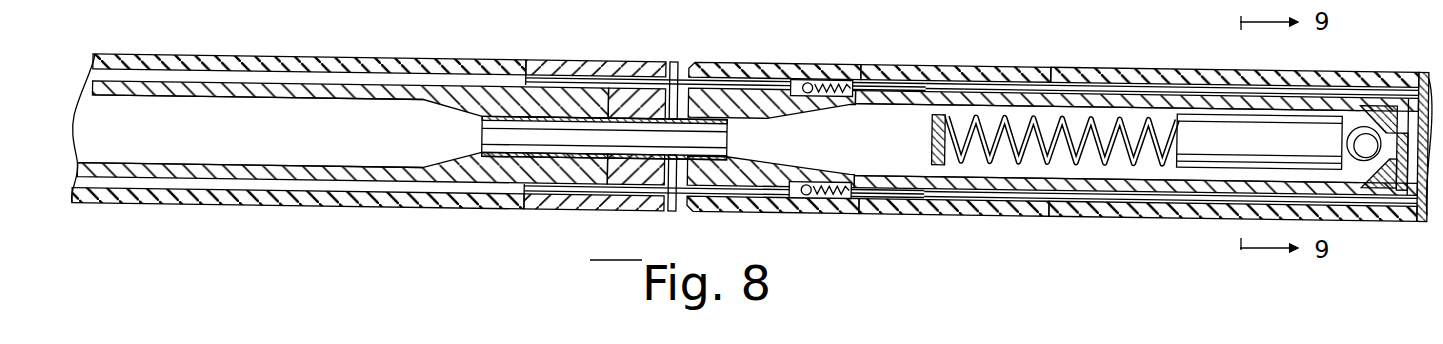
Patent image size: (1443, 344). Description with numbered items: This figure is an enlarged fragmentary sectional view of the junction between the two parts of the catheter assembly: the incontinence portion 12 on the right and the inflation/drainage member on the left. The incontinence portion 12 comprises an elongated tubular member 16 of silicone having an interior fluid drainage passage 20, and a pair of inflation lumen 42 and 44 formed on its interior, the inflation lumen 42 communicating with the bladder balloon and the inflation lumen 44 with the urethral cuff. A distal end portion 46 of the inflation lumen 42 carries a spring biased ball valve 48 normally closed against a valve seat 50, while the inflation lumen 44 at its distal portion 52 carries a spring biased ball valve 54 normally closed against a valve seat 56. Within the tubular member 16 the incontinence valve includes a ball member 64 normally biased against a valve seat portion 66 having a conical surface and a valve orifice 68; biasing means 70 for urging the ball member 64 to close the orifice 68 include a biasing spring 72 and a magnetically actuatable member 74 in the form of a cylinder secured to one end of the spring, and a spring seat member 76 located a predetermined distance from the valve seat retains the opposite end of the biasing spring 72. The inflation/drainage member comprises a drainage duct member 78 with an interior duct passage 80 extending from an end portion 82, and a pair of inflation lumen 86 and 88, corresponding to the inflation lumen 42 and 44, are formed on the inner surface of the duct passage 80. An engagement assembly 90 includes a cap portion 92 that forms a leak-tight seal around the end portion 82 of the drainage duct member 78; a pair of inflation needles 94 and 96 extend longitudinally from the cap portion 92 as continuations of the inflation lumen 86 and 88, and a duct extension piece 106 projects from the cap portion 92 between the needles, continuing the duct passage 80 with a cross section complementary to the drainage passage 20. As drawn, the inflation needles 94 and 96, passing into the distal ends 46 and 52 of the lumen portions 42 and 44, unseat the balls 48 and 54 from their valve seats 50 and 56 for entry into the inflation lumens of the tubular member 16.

The incontinence portion 12 is at (1100, 57).
The elongated tubular member 16 is at (954, 57).
The interior fluid drainage passage 20 is at (895, 105).
The inflation lumen 42 is at (1025, 85).
The inflation lumen 44 is at (985, 192).
The distal end portion of inflation lumen 46 is at (727, 62).
The spring biased ball valve 48 is at (815, 78).
The valve seat 50 is at (791, 80).
The distal portion of inflation lumen 52 is at (732, 206).
The spring biased ball valve 54 is at (815, 192).
The valve seat 56 is at (784, 190).
The ball member 64 is at (1356, 132).
The valve seat portion 66 is at (1407, 70).
The valve orifice 68 is at (1392, 154).
The biasing means 70 is at (1128, 168).
The biasing spring 72 is at (1068, 166).
The magnetically actuatable member 74 is at (1222, 172).
The spring seat member 76 is at (930, 162).
The drainage duct member 78 is at (350, 54).
The interior duct passage 80 is at (145, 148).
The end portion of drainage duct member 82 is at (558, 57).
The inflation lumen 86 is at (196, 62).
The inflation lumen 88 is at (225, 183).
The engagement assembly 90 is at (630, 216).
The cap portion 92 is at (675, 62).
The inflation needle 94 is at (752, 80).
The inflation needle 96 is at (713, 203).
The duct extension piece 106 is at (515, 146).